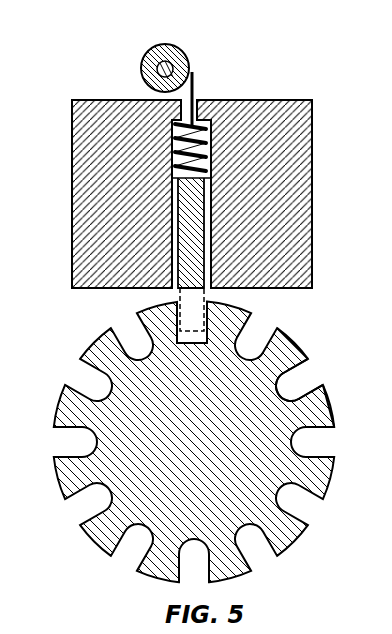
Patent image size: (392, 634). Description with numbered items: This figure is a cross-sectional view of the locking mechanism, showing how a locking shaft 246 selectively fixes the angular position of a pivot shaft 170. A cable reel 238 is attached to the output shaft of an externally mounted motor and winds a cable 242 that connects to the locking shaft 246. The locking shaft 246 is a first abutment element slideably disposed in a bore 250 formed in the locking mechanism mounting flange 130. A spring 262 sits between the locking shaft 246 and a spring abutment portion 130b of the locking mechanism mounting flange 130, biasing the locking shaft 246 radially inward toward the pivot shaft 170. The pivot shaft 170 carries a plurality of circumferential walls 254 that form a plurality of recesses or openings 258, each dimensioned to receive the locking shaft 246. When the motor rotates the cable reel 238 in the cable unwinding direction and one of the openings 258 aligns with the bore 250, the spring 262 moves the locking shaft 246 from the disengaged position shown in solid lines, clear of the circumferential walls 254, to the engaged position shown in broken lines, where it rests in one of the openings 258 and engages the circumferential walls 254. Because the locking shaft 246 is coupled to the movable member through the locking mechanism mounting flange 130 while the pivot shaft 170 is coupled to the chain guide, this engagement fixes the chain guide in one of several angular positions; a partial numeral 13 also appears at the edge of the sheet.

The locking mechanism mounting flange 130 is at (78, 107).
The spring abutment portion 130b is at (155, 101).
The cable reel 238 is at (152, 50).
The cable 242 is at (193, 112).
The bore 250 is at (188, 124).
The spring 262 is at (200, 148).
The locking shaft 246 is at (196, 224).
The pivot shaft 170 is at (225, 442).
The circumferential walls 254 is at (303, 362).
The openings 258 is at (297, 378).
The element 13 is at (382, 522).